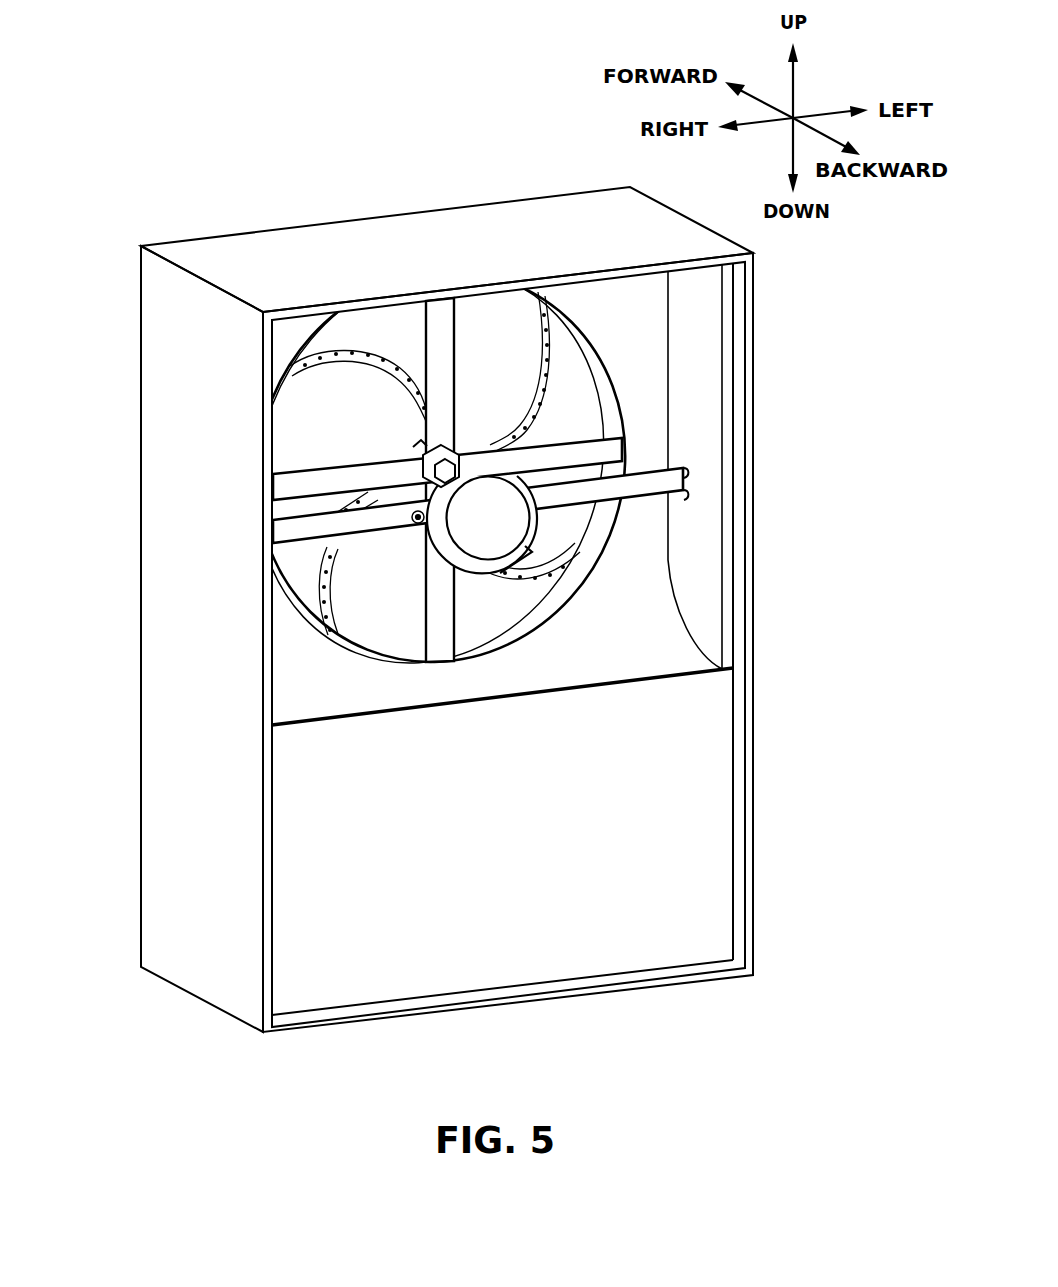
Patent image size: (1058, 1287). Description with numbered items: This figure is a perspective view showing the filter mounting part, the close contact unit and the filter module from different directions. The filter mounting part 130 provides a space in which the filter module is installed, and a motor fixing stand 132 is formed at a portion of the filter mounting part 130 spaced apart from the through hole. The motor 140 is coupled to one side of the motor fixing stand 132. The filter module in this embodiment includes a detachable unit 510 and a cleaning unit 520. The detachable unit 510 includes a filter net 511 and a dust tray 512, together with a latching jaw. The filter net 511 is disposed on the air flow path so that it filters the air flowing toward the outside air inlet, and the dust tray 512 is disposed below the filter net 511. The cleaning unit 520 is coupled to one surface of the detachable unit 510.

The filter mounting part 130 is at (178, 407).
The motor fixing stand 132 is at (291, 522).
The motor 140 is at (467, 540).
The detachable unit 510 is at (653, 322).
The filter net 511 is at (560, 393).
The dust tray 512 is at (695, 737).
The cleaning unit 520 is at (642, 446).